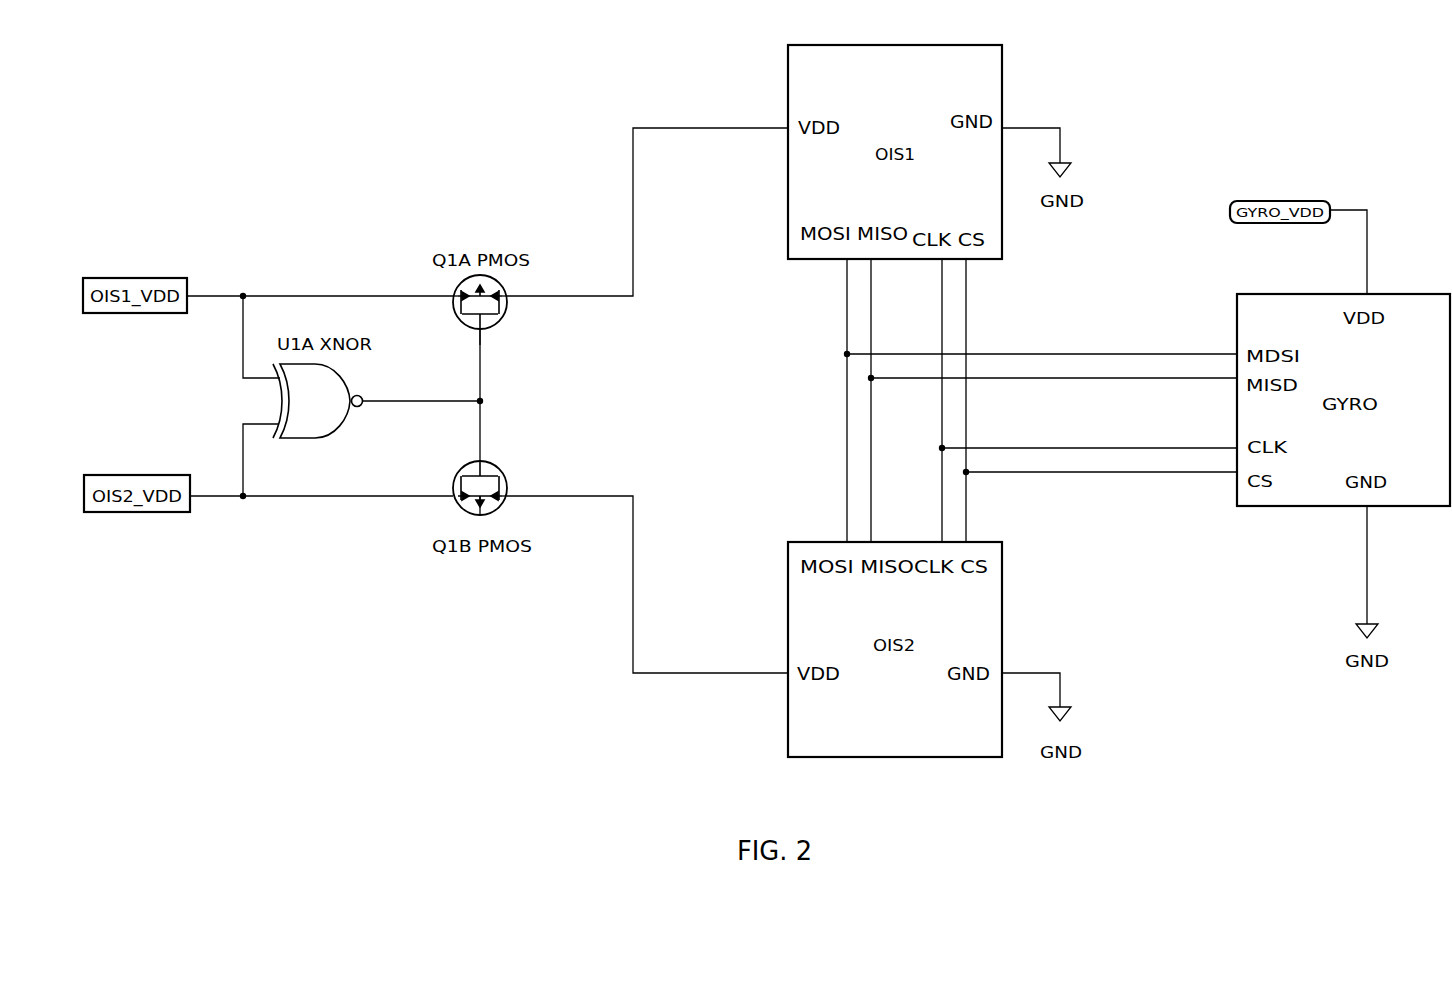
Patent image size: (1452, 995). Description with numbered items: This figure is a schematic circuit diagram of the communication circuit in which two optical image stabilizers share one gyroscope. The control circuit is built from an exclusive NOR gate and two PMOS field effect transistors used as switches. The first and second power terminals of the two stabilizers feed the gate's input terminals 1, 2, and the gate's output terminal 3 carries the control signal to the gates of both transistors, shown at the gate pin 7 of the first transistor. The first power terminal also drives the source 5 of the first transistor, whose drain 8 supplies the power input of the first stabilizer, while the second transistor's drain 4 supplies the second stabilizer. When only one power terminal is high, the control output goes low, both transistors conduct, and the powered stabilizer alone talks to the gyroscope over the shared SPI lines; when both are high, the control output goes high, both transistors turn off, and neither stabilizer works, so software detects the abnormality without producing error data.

The XNOR gate U1A input pin 1 is at (260, 451).
The XNOR gate U1A input pin 2 / PMOS Q1B gate pin 2 is at (361, 405).
The XNOR gate U1A output pin 3 (CONTROL) / PMOS Q1B pin 3 is at (436, 395).
The PMOS Q1B drain pin 4 is at (511, 505).
The PMOS Q1A source pin 5 is at (448, 303).
The PMOS Q1A gate pin 7 is at (494, 342).
The PMOS Q1A drain pin 8 is at (511, 303).